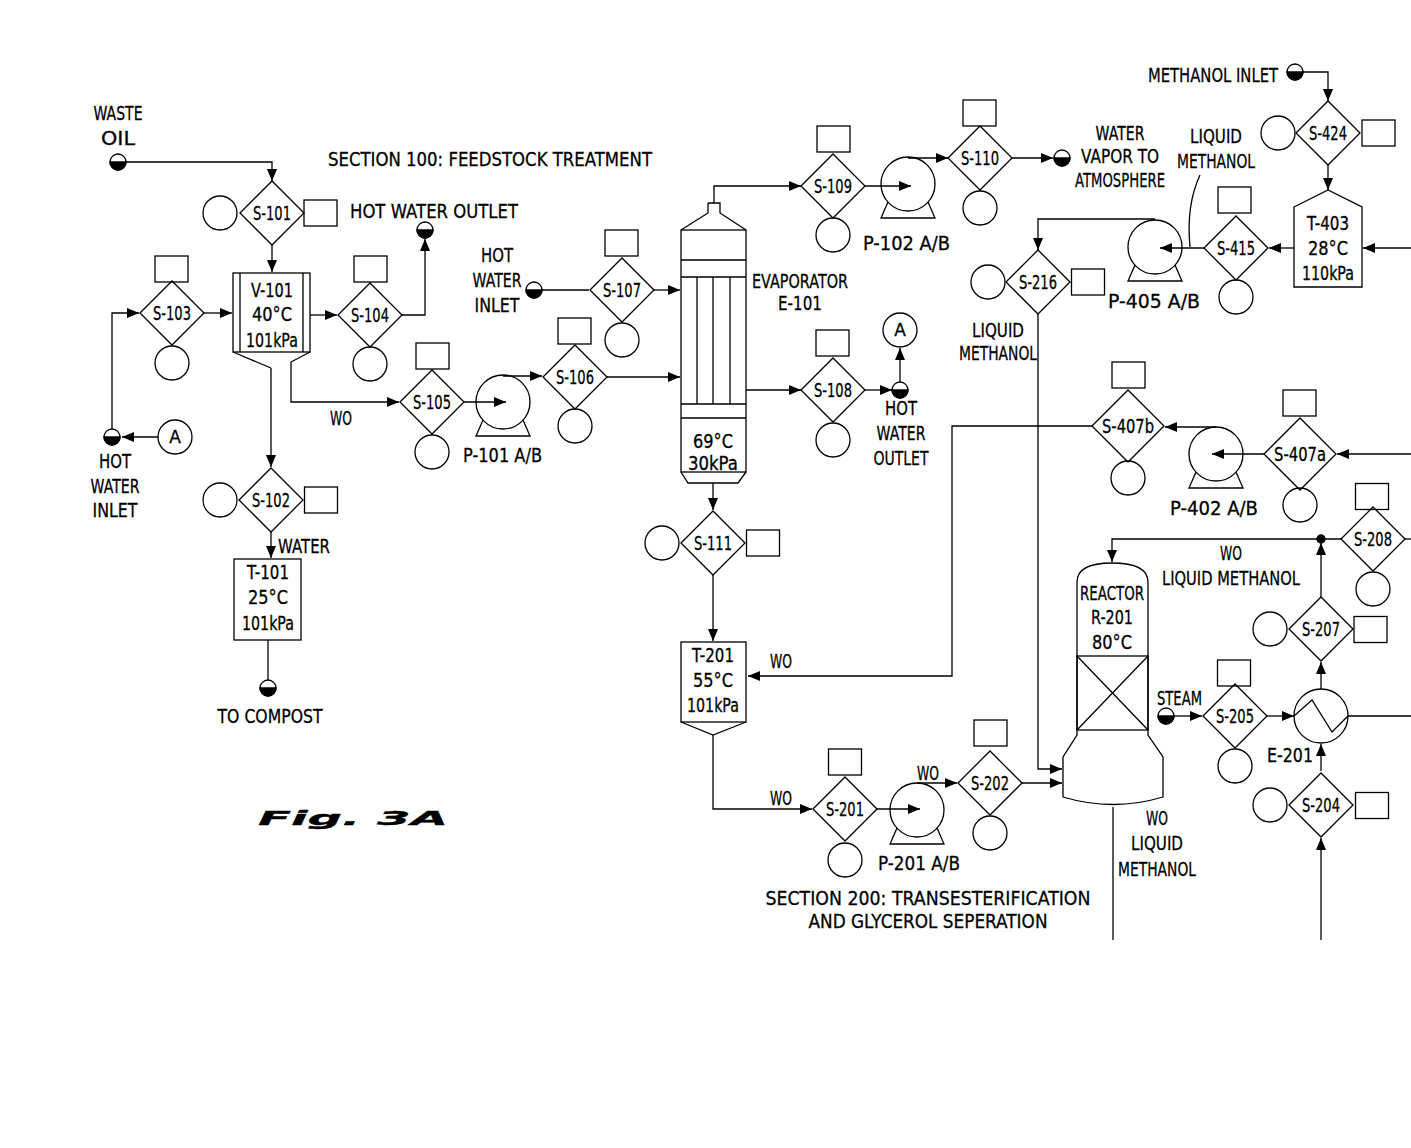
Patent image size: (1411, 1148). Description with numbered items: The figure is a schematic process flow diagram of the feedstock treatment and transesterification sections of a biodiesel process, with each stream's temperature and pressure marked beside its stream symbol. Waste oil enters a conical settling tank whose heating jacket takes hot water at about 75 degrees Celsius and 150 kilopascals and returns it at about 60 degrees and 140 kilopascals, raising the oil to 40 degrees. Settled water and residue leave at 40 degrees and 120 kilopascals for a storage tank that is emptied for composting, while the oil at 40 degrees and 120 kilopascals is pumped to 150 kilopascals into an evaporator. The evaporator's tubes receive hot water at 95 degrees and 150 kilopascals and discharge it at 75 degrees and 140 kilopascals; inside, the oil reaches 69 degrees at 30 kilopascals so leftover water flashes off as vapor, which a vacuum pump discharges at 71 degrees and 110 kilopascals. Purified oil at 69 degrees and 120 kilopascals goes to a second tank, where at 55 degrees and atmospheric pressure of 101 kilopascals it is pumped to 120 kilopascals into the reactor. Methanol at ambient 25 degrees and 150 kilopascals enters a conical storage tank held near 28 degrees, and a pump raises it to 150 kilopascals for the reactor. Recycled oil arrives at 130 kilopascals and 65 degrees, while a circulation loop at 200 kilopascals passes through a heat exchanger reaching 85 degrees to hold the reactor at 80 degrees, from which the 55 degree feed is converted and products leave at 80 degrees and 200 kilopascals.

The methanol inlet temperature 25 is at (749, 173).
The atmospheric pressure 101 is at (583, 487).
The elevated stream pressure 150 is at (775, 403).
The hot water jacket temperature 75 is at (736, 434).
The hot water outlet pressure 140 is at (601, 306).
The jacket water outlet temperature 60 is at (370, 364).
The intermediate stream pressure 120 is at (811, 485).
The settling tank temperature 40 is at (397, 463).
The evaporator hot water inlet temperature 95 is at (622, 340).
The evaporator vacuum pressure 30 is at (833, 139).
The evaporator outlet temperature 69 is at (747, 389).
The vacuum pump discharge pressure 110 is at (979, 113).
The vacuum pump discharge temperature 71 is at (980, 208).
The methanol temperature 28 is at (1112, 289).
The recycled waste oil pump pressure 130 is at (1128, 375).
The recycled waste oil temperature 65 is at (1128, 478).
The reactor loop pressure 200 is at (1371, 651).
The reactor operating temperature 80 is at (1373, 589).
The heat exchanger outlet temperature 85 is at (1270, 629).
The waste oil feed temperature 55 is at (1057, 832).